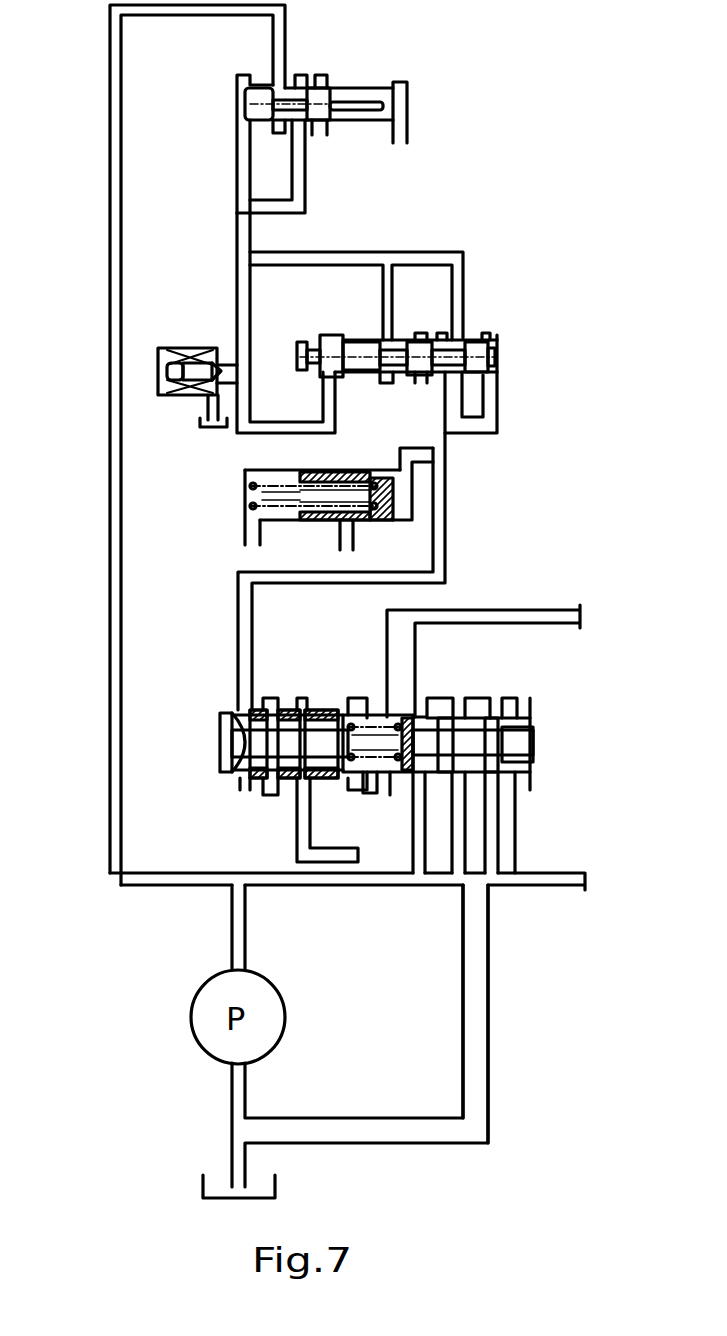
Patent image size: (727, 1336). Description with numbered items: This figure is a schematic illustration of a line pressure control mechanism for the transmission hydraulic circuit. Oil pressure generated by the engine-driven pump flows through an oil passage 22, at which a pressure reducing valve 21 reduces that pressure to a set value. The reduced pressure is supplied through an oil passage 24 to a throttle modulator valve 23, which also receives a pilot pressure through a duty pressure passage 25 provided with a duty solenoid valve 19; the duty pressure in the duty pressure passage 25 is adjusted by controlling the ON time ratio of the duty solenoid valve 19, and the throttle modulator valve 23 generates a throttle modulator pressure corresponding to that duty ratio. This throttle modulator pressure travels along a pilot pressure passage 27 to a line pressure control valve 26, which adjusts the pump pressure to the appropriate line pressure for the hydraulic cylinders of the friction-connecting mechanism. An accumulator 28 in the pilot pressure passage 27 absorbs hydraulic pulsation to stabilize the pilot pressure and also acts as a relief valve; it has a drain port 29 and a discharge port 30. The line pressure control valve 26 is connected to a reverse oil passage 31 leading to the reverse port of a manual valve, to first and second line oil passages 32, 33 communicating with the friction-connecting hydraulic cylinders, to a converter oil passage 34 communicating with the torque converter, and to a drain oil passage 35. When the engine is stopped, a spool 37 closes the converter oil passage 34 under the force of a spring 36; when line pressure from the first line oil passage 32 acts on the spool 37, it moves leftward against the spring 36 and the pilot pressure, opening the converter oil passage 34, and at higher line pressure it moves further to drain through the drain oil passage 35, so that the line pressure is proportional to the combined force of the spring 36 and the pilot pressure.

The duty solenoid valve 19 is at (183, 347).
The pressure reducing valve 21 is at (366, 82).
The oil passage 22 is at (110, 369).
The throttle modulator valve 23 is at (358, 334).
The oil passage 24 is at (237, 242).
The duty pressure passage 25 is at (253, 392).
The line pressure control valve 26 is at (327, 704).
The pilot pressure passage 27 is at (447, 520).
The accumulator 28 is at (365, 466).
The drain port 29 is at (245, 533).
The discharge port 30 is at (340, 542).
The reverse oil passage 31 is at (297, 818).
The first line oil passage 32 is at (425, 828).
The second line oil passage 33 is at (515, 818).
The converter oil passage 34 is at (417, 642).
The drain oil passage 35 is at (490, 1007).
The spring 36 is at (355, 727).
The spool 37 is at (250, 740).